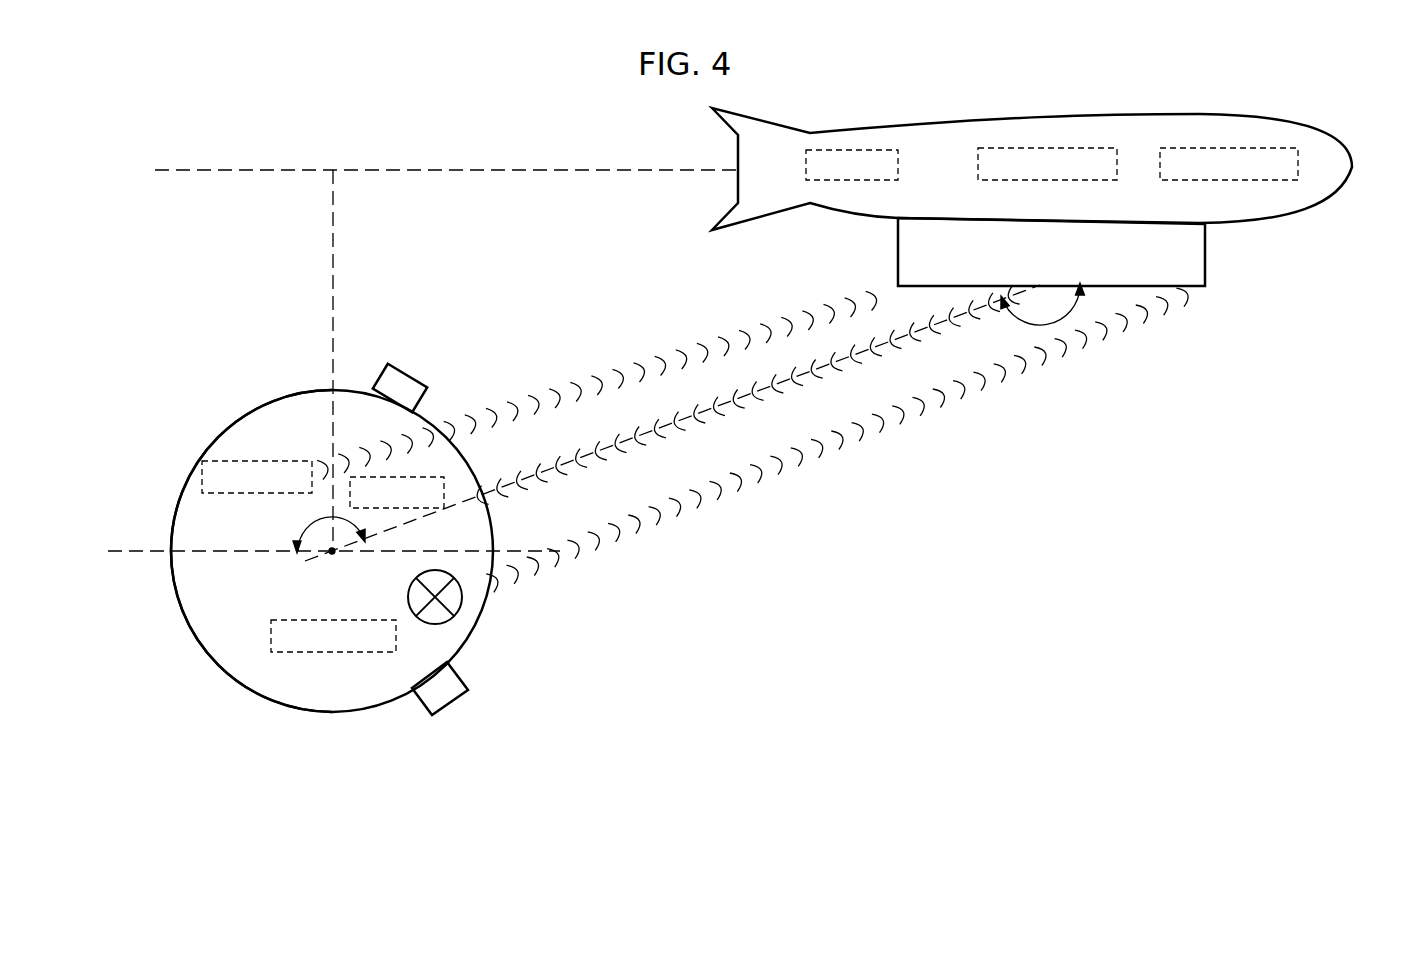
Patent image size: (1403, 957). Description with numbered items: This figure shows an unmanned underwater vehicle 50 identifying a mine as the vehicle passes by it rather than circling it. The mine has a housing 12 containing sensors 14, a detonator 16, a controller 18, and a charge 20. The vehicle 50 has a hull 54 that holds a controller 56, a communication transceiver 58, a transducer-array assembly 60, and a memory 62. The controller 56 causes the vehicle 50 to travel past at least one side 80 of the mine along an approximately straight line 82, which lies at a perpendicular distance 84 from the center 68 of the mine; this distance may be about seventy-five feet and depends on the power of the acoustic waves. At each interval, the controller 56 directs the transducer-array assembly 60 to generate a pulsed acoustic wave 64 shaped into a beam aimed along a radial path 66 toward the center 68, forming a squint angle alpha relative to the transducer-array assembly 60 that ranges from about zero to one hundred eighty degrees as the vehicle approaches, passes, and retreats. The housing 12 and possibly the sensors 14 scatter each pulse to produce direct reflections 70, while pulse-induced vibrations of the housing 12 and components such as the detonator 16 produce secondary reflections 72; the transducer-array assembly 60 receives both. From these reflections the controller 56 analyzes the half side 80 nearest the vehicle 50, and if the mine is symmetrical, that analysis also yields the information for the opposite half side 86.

The housing 12 is at (177, 500).
The sensors 14 is at (410, 372).
The detonator 16 is at (222, 460).
The controller 18 is at (355, 652).
The charge 20 is at (443, 483).
The vehicle 50 is at (1003, 193).
The hull 54 is at (1342, 150).
The controller 56 is at (1057, 148).
The communication transceiver 58 is at (1225, 148).
The transducer-array assembly 60 is at (1205, 270).
The memory 62 is at (855, 150).
The pulsed acoustic wave 64 is at (647, 437).
The radial path 66 is at (767, 390).
The center 68 is at (318, 565).
The direct reflections 70 is at (885, 425).
The secondary reflections 72 is at (595, 380).
The side 80 is at (246, 388).
The straight line 82 is at (527, 170).
The perpendicular distance 84 is at (335, 252).
The opposite half side 86 is at (245, 722).